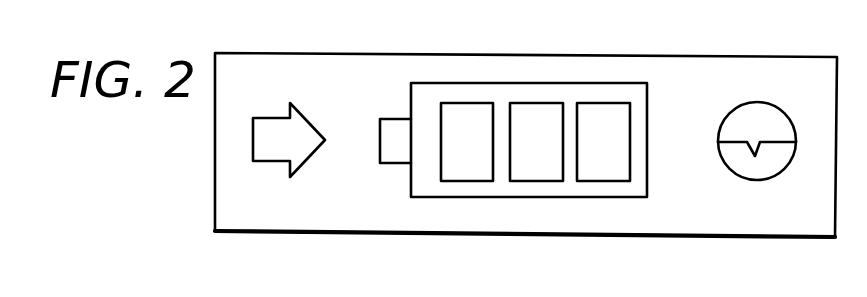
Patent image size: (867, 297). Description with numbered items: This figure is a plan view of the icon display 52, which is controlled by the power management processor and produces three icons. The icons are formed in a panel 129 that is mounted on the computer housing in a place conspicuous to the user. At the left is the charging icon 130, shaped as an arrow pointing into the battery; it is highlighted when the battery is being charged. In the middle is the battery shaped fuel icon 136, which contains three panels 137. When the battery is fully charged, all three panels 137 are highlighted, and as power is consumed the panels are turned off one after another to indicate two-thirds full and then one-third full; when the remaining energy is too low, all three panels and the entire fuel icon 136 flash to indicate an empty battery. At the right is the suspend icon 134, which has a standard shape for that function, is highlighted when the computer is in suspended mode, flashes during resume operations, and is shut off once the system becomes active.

The icon display 52 is at (189, 201).
The panel 129 is at (322, 53).
The charging icon 130 is at (265, 150).
The suspend icon 134 is at (780, 180).
The battery shaped fuel icon 136 is at (522, 197).
The panels 137 is at (600, 117).